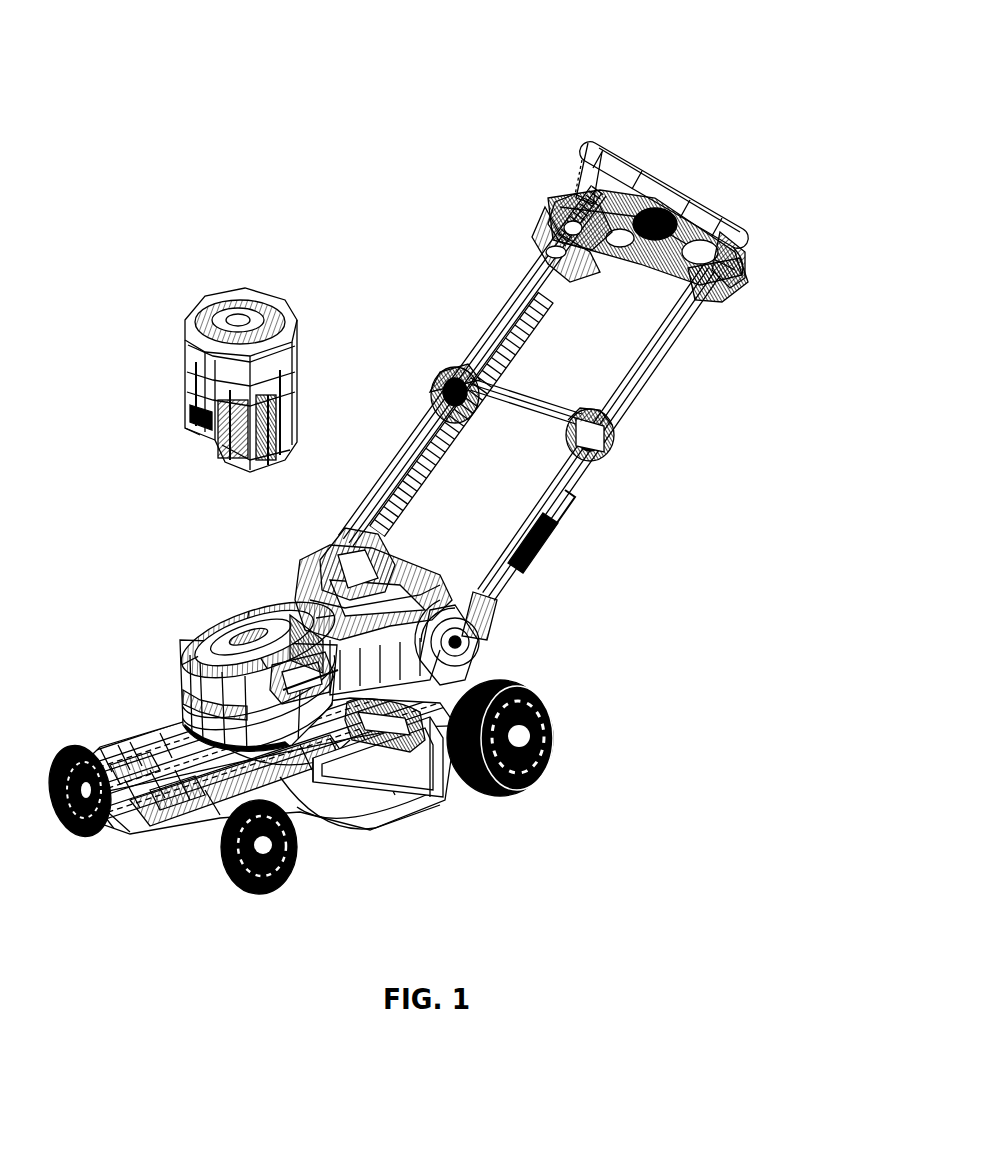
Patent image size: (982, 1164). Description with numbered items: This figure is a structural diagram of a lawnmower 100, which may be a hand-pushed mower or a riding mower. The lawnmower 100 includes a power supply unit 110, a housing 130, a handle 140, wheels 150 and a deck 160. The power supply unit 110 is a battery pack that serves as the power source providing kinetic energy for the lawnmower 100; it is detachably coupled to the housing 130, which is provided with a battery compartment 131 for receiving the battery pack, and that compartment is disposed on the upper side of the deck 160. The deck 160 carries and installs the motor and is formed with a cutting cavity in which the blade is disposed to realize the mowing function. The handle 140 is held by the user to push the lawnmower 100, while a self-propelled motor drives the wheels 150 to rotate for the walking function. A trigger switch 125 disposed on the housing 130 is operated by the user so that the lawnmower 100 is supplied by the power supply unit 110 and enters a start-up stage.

The lawnmower 100 is at (573, 125).
The power supply unit 110 is at (292, 310).
The trigger switch 125 is at (575, 192).
The housing 130 is at (165, 722).
The motor housing 131 is at (228, 620).
The handle 140 is at (713, 197).
The wheels 150 is at (548, 761).
The deck 160 is at (363, 823).